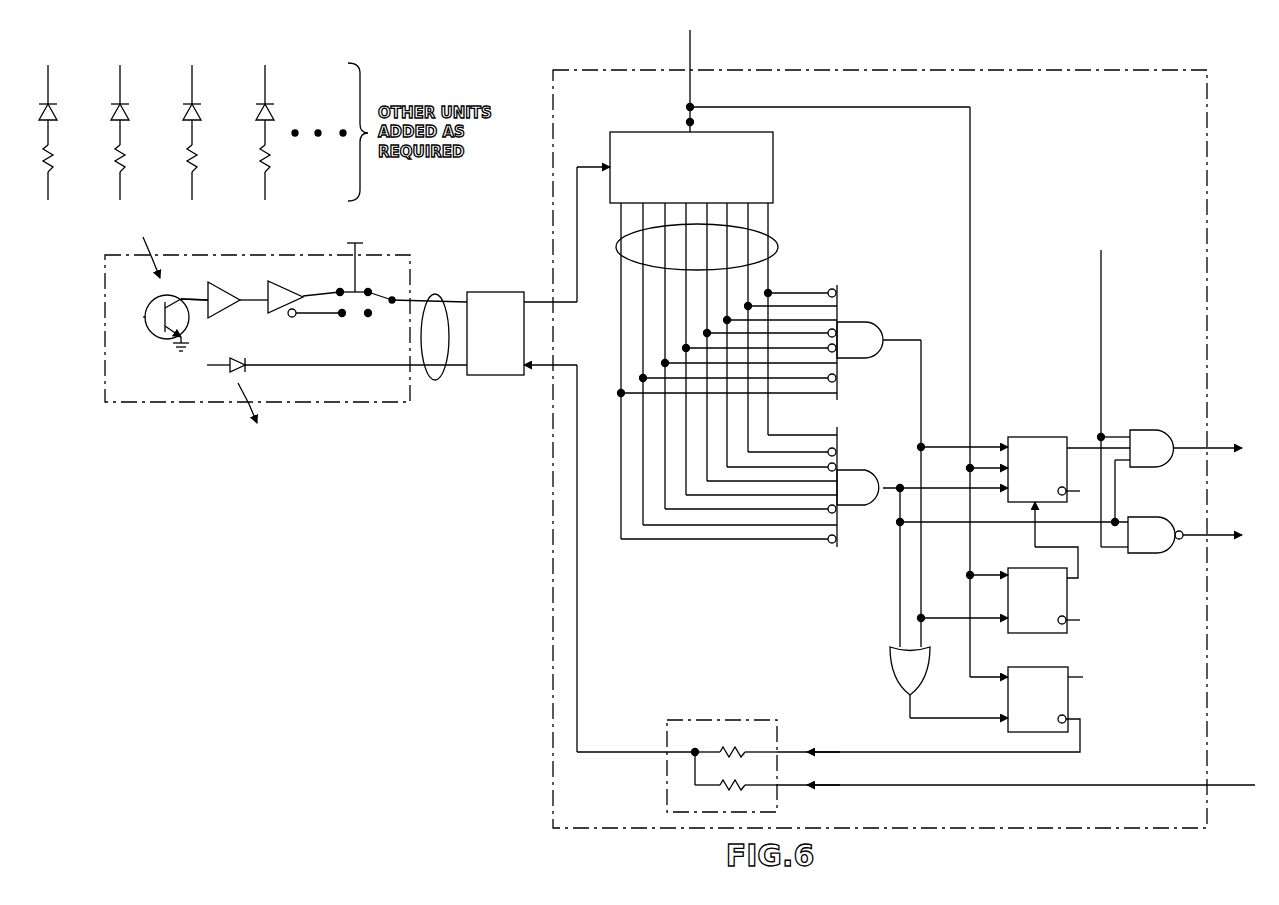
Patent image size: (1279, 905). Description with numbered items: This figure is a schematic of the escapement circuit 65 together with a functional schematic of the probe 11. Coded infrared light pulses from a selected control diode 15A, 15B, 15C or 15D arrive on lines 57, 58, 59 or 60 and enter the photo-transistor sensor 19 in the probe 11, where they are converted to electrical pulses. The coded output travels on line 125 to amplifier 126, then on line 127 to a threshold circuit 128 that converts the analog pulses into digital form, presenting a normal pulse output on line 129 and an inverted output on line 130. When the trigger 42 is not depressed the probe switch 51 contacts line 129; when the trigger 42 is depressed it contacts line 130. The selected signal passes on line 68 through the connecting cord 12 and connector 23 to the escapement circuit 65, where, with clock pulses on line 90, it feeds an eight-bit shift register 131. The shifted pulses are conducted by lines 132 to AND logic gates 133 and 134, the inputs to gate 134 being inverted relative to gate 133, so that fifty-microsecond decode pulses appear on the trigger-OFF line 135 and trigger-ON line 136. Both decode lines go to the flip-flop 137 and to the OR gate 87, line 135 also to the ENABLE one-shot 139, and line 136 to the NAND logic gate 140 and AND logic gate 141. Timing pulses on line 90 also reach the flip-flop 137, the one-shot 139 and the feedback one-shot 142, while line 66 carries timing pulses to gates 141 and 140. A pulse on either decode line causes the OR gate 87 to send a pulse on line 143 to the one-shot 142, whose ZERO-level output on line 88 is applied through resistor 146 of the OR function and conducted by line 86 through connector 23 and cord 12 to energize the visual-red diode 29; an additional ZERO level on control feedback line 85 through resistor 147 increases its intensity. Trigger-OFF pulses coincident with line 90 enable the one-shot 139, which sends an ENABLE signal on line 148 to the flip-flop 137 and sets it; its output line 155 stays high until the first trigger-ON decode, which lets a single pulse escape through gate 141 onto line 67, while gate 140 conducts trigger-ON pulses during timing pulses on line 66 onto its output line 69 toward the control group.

The line 57 is at (50, 72).
The line 58 is at (122, 72).
The line 59 is at (194, 72).
The line 60 is at (267, 72).
The control diode 15A is at (58, 115).
The control diode 15B is at (130, 115).
The control diode 15C is at (202, 115).
The control diode 15D is at (275, 115).
The probe 11 is at (105, 365).
The photo-transistor sensor 19 is at (146, 323).
The line 125 is at (197, 298).
The amplifier 126 is at (231, 292).
The line 127 is at (257, 300).
The threshold circuit 128 is at (295, 286).
The line 129 is at (318, 290).
The line 130 is at (318, 315).
The trigger 42 is at (357, 248).
The probe switch 51 is at (373, 290).
The visual-red diode 29 is at (243, 358).
The connecting cord 12 is at (434, 293).
The connector 23 is at (497, 292).
The line 68 is at (578, 306).
The line 86 is at (584, 354).
The escapement circuit 65 is at (884, 72).
The line 90 is at (692, 52).
The 8-bit shift register 131 is at (652, 130).
The lines 132 is at (778, 247).
The AND logic gate 133 is at (870, 320).
The AND logic gate 134 is at (870, 470).
The line 135 is at (923, 376).
The line 136 is at (892, 500).
The line 66 is at (1103, 264).
The flip-flop 137 is at (1040, 436).
The output line 155 is at (1082, 445).
The AND logic gate 141 is at (1150, 428).
The line 67 is at (1218, 446).
The NAND logic gate 140 is at (1176, 505).
The output line 69 is at (1218, 533).
The ENABLE one-shot 139 is at (1027, 568).
The line 148 is at (1080, 560).
The feedback one-shot 142 is at (1042, 667).
The line 143 is at (958, 718).
The OR gate 87 is at (890, 660).
The line 88 is at (870, 752).
The control feedback line 85 is at (1214, 782).
The resistor 146 is at (729, 746).
The resistor 147 is at (730, 790).